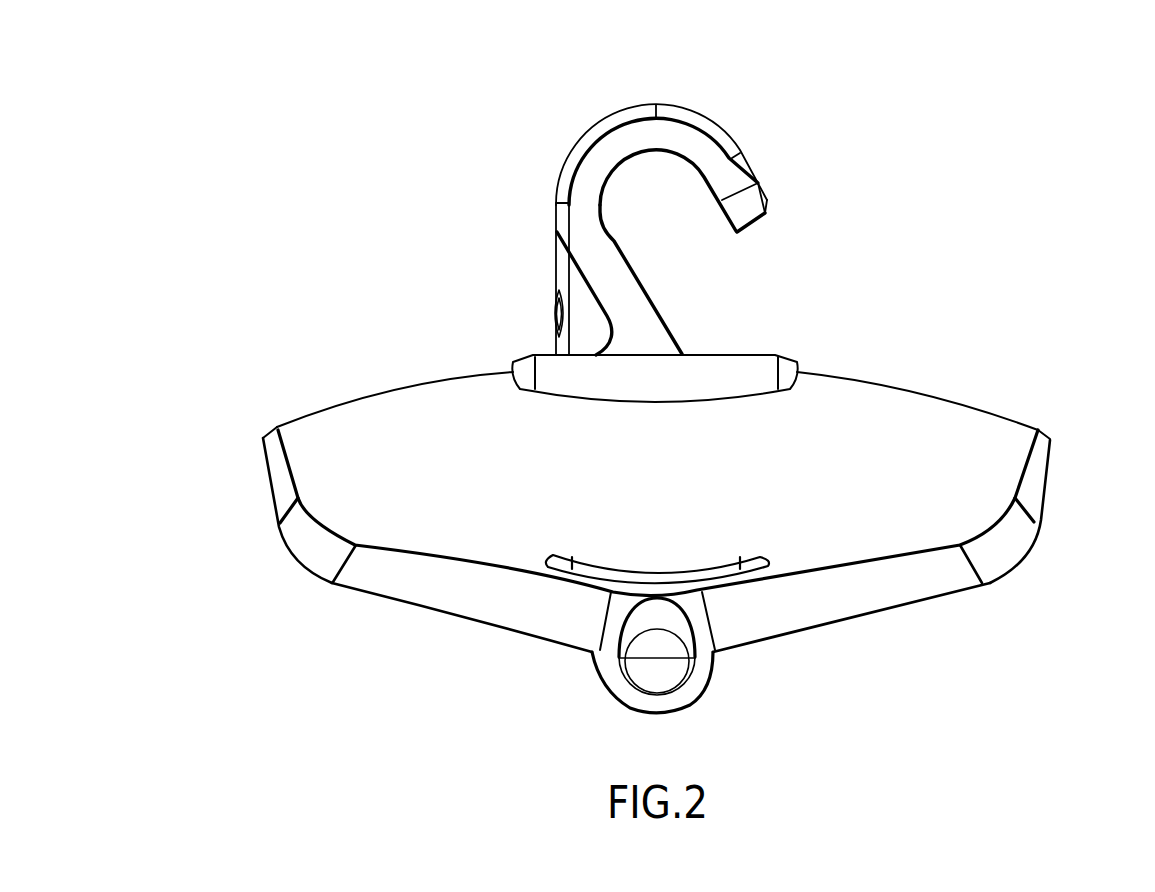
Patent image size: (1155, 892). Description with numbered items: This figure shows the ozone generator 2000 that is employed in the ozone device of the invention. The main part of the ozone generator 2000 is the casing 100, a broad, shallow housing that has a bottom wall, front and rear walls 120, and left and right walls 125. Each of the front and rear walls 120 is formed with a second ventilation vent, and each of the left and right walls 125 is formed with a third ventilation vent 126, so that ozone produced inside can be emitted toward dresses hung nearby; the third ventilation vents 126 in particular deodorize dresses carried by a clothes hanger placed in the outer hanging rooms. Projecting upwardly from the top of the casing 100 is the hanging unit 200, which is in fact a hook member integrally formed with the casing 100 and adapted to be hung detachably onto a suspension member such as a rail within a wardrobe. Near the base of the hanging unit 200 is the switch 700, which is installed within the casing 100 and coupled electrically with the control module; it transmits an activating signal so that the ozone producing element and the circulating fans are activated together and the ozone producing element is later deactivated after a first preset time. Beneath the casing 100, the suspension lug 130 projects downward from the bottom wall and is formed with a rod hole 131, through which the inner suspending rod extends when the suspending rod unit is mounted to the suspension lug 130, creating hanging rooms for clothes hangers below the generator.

The ozone generator 2000 is at (1085, 126).
The hanging unit 200 is at (620, 117).
The switch 700 is at (551, 311).
The casing 100 is at (903, 402).
The front and rear walls 120 is at (1044, 487).
The left and right walls 125 is at (828, 543).
The third ventilation vent 126 is at (752, 560).
The suspension lug 130 is at (612, 682).
The rod hole 131 is at (660, 683).